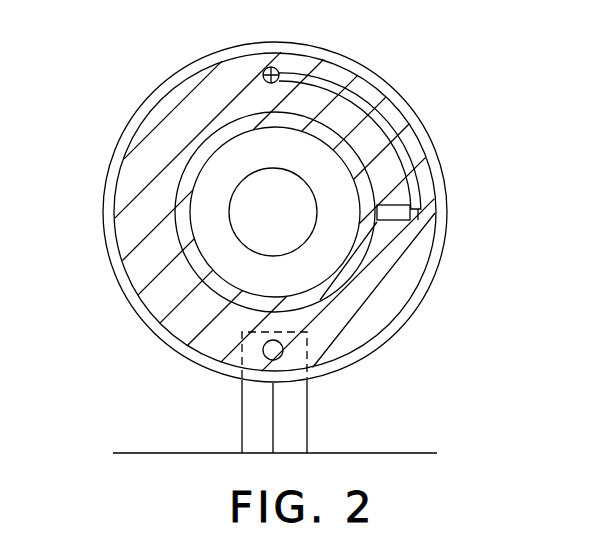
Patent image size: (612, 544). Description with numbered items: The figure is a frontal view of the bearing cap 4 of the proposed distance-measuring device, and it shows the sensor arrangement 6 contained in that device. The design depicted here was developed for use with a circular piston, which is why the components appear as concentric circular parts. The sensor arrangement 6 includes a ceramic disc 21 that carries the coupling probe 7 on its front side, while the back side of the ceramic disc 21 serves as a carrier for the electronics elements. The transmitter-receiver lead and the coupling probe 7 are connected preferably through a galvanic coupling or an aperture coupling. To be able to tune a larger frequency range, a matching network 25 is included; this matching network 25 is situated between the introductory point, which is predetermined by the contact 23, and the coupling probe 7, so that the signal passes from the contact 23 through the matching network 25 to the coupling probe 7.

The bearing cap 4 is at (320, 39).
The sensor arrangement 6 is at (200, 119).
The coupling probe 7 is at (396, 236).
The ceramic disc 21 is at (140, 156).
The contact 23 is at (263, 68).
The matching network 25 is at (372, 100).